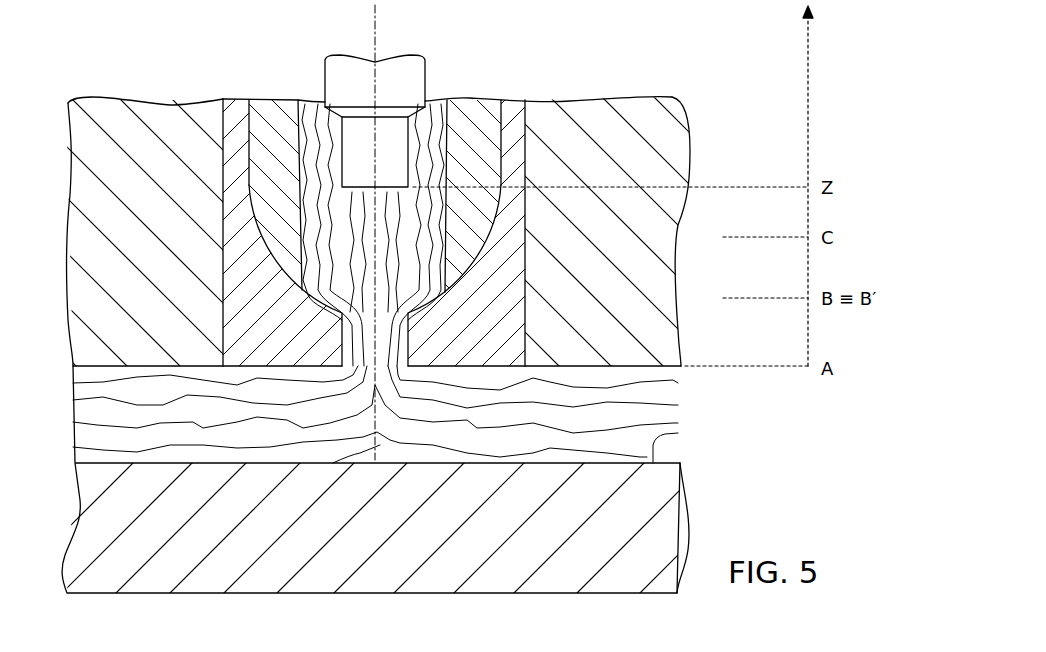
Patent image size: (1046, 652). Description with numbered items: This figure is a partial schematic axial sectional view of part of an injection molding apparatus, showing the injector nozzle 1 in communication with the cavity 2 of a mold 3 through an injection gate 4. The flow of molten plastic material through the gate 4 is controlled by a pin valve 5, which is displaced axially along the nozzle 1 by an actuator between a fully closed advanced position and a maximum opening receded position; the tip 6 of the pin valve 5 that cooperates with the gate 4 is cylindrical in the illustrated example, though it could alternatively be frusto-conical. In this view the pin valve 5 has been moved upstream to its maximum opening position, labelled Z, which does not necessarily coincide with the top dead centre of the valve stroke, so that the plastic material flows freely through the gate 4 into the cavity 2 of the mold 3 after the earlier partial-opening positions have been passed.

The nozzle 1 is at (237, 105).
The cavity 2 is at (678, 433).
The mold 3 is at (312, 568).
The injection gate 4 is at (409, 333).
The pin valve 5 is at (408, 70).
The tip 6 is at (353, 155).